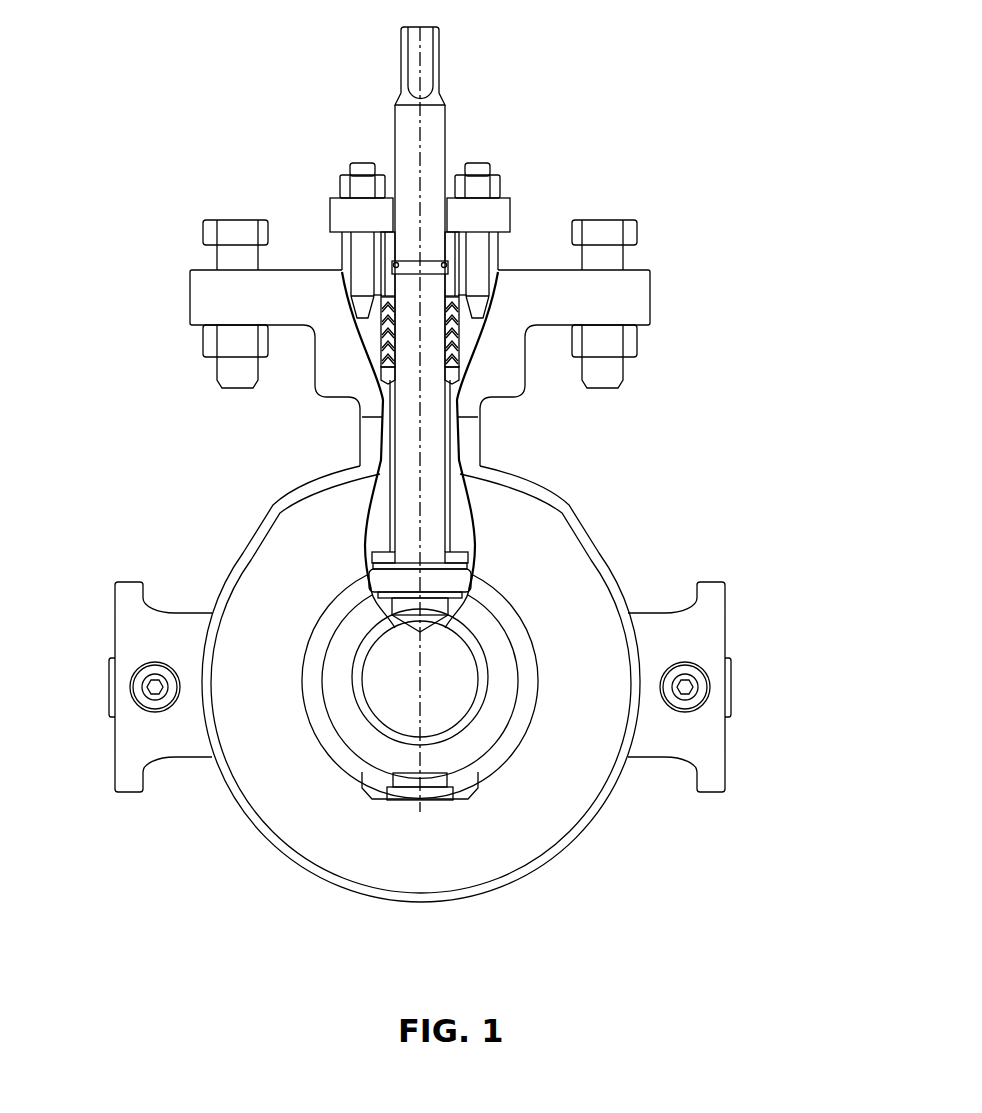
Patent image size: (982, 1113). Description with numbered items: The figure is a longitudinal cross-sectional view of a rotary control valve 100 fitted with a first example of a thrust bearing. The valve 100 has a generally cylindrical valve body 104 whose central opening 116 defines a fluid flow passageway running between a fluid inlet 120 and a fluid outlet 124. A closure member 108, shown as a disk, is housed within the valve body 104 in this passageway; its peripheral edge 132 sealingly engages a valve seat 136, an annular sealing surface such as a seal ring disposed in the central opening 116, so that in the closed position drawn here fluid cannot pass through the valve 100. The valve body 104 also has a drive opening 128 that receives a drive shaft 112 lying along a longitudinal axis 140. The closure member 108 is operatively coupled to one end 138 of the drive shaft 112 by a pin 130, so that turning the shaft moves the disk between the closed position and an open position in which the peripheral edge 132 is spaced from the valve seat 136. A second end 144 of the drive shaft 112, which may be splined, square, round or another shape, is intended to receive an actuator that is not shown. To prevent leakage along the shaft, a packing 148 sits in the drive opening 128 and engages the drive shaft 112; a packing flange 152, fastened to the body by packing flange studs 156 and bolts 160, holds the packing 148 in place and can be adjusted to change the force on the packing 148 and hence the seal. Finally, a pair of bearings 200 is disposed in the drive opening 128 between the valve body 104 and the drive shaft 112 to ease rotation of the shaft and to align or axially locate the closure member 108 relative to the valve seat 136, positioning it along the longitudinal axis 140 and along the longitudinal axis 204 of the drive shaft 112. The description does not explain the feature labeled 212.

The rotary control valve 100 is at (588, 189).
The valve body 104 is at (566, 800).
The closure member 108 is at (493, 640).
The drive shaft 112 is at (435, 452).
The central opening 116 is at (520, 737).
The fluid inlet 120 is at (332, 750).
The fluid outlet 124 is at (315, 617).
The drive opening 128 is at (450, 408).
The pin 130 is at (460, 580).
The peripheral edge 132 is at (517, 653).
The valve seat 136 is at (520, 707).
The one end of the drive shaft 138 is at (432, 546).
The longitudinal axis 140 is at (423, 43).
The second end of the drive shaft 144 is at (437, 128).
The packing 148 is at (460, 333).
The packing flange 152 is at (512, 210).
The packing flange studs 156 is at (361, 163).
The bolts 160 is at (340, 188).
The bearings 200 is at (392, 493).
The longitudinal axis of the drive shaft 204 is at (420, 407).
The bonnet seal 212 is at (368, 556).